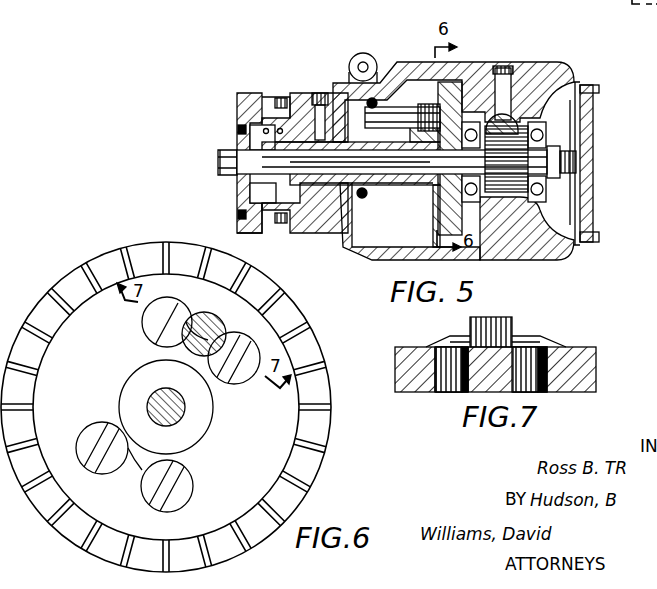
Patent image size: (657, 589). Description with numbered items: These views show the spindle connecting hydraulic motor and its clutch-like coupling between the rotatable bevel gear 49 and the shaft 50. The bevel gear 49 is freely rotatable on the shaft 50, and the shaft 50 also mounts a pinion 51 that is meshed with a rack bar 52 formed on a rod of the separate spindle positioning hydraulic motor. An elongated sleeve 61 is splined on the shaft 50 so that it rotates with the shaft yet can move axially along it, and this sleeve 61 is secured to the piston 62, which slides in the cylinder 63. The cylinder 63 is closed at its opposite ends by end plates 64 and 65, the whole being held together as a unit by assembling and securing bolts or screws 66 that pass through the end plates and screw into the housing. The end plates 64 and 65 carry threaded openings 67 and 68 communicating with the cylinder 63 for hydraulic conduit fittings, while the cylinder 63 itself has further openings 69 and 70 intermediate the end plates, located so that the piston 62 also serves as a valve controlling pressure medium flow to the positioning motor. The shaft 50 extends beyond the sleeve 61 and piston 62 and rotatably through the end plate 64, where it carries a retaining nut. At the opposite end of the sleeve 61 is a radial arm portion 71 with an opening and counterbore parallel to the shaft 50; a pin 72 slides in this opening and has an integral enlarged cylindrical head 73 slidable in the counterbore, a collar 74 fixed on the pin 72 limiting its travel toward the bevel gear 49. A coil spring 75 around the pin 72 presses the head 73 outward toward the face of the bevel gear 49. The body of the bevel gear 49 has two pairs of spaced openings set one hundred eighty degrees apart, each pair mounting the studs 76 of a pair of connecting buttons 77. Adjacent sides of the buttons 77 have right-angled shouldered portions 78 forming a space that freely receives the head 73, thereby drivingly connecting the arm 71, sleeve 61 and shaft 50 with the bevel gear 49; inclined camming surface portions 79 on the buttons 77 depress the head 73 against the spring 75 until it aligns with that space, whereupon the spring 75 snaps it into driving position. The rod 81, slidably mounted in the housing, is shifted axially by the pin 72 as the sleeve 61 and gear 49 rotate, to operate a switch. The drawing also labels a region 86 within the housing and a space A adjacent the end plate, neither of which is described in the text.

In FIG. 5, the bevel gear 49 is at (456, 92).
In FIG. 6, the bevel gear 49 is at (322, 418).
In FIG. 7, the bevel gear 49 is at (590, 378).
In FIG. 5, the shaft 50 is at (432, 186).
In FIG. 6, the shaft 50 is at (185, 420).
In FIG. 5, the pinion 51 is at (521, 186).
In FIG. 5, the rack bar 52 is at (510, 112).
In FIG. 5, the elongated sleeve 61 is at (368, 194).
In FIG. 5, the piston 62 is at (302, 230).
In FIG. 5, the cylinder 63 is at (262, 92).
In FIG. 5, the end plate 64 is at (240, 233).
In FIG. 5, the end plate 65 is at (306, 233).
In FIG. 5, the assembling and securing bolts or screws 66 is at (287, 96).
In FIG. 5, the threaded opening 67 is at (237, 133).
In FIG. 5, the threaded opening 68 is at (322, 92).
In FIG. 5, the opening 69 is at (266, 137).
In FIG. 5, the opening 70 is at (280, 97).
In FIG. 5, the radial arm portion 71 is at (432, 105).
In FIG. 5, the pin 72 is at (364, 122).
In FIG. 5, the cylindrical head 73 is at (461, 158).
In FIG. 6, the cylindrical head 73 is at (226, 306).
In FIG. 7, the cylindrical head 73 is at (502, 318).
In FIG. 5, the collar 74 is at (380, 104).
In FIG. 5, the coil spring 75 is at (384, 183).
In FIG. 7, the stud 76 is at (530, 336).
In FIG. 6, the connecting button 77 is at (232, 344).
In FIG. 7, the connecting button 77 is at (542, 338).
In FIG. 6, the right-angled shouldered portion 78 is at (162, 360).
In FIG. 6, the inclined camming surface portion 79 is at (152, 328).
In FIG. 7, the inclined camming surface portion 79 is at (446, 344).
In FIG. 5, the rod 81 is at (368, 90).
In FIG. 5, the cavity 86 is at (358, 197).
In FIG. 5, the chamber A is at (262, 184).